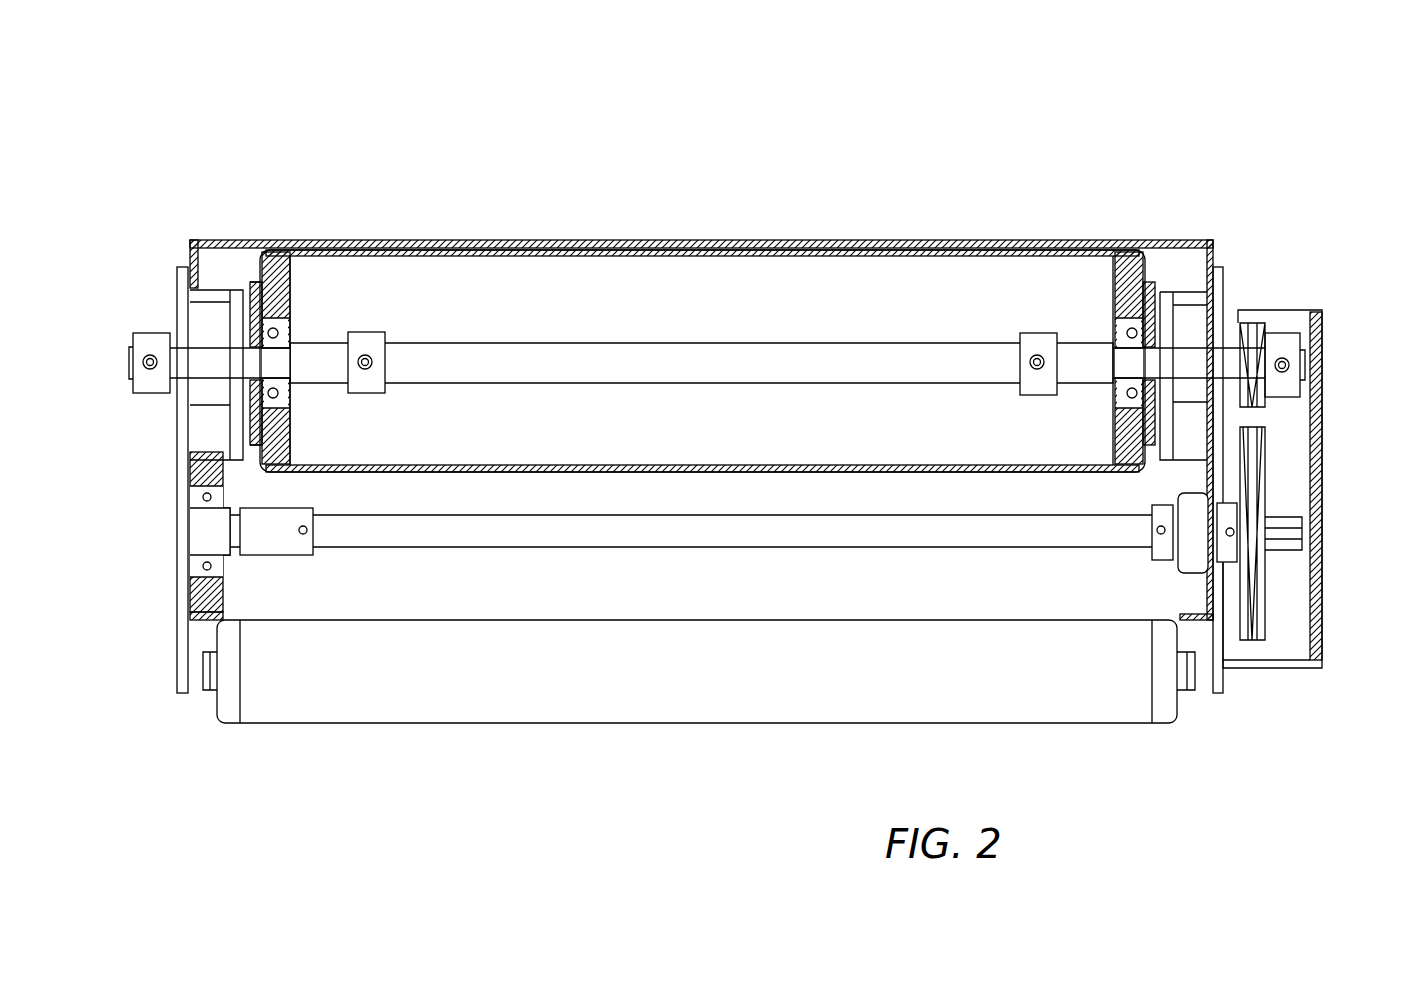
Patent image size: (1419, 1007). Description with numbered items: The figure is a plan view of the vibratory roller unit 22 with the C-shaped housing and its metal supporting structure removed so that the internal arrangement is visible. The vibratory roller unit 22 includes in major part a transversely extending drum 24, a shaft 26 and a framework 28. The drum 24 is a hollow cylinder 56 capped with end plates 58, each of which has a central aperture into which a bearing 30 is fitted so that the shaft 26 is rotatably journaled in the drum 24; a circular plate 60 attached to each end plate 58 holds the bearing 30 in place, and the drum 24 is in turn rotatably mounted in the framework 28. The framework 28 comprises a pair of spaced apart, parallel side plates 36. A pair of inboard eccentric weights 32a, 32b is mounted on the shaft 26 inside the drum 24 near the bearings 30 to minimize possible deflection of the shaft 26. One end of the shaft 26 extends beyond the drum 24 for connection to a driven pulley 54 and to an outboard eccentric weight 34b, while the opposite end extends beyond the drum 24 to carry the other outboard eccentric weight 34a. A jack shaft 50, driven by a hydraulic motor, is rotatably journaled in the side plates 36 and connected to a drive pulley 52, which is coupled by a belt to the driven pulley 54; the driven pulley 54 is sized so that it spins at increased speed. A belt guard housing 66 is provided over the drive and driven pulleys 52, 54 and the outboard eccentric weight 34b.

The vibratory roller unit 22 is at (1084, 178).
The drum 24 is at (737, 476).
The shaft 26 is at (545, 342).
The framework 28 is at (174, 469).
The bearings 30 is at (287, 322).
The inboard eccentric weight 32a is at (365, 393).
The inboard eccentric weight 32b is at (1028, 395).
The outboard eccentric weight 34a is at (152, 335).
The outboard eccentric weight 34b is at (1280, 333).
The side plates 36 is at (176, 625).
The jack shaft 50 is at (500, 548).
The drive pulley 52 is at (1267, 483).
The driven pulley 54 is at (1262, 408).
The hollow cylinder 56 is at (582, 472).
The end plates 58 is at (250, 265).
The circular plate 60 is at (255, 290).
The belt guard housing 66 is at (1322, 385).